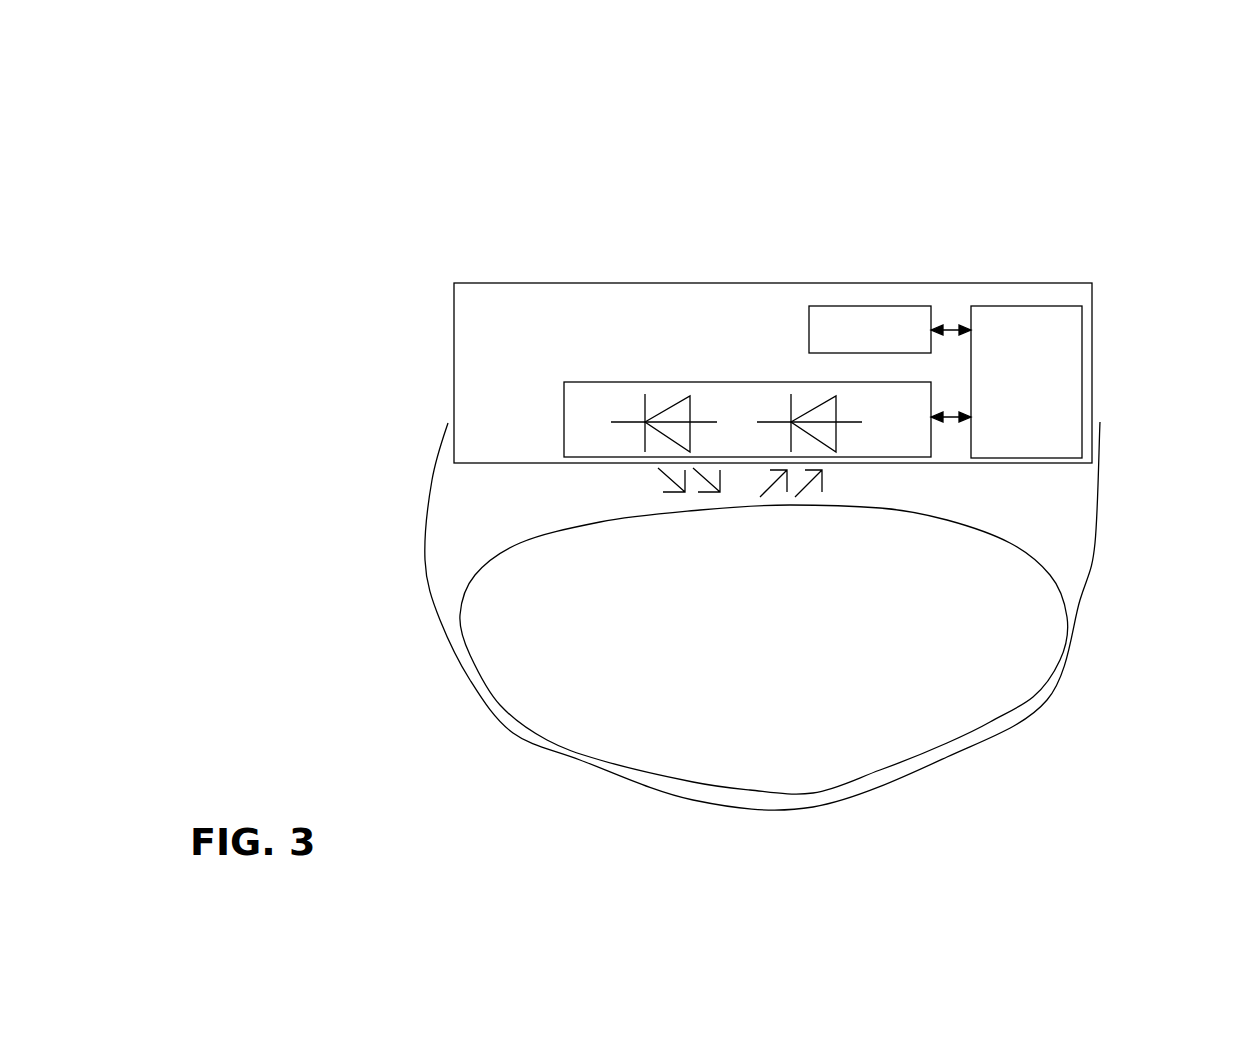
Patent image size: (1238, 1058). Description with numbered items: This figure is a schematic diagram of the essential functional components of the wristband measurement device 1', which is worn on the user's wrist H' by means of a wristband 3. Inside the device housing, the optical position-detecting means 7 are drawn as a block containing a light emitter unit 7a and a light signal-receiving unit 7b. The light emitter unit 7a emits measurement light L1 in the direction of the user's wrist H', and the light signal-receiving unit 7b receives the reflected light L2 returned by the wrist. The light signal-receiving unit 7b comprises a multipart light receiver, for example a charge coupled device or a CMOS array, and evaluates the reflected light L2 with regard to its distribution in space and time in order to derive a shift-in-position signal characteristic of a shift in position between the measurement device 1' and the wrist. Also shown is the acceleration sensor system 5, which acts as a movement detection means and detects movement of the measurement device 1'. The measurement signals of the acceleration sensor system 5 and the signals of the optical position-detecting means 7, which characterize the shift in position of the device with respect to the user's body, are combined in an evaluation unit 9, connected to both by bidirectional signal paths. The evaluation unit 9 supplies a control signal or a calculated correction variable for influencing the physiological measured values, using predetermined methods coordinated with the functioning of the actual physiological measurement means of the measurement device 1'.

The wristband measurement device 1' is at (810, 271).
The wristband 3 is at (472, 678).
The acceleration sensor system 5 is at (875, 306).
The optical position-detecting means 7 is at (747, 266).
The light emitter unit 7a is at (685, 407).
The light signal-receiving unit 7b is at (823, 413).
The evaluation unit 9 is at (1037, 365).
The measurement light L1 is at (687, 490).
The reflected light L2 is at (822, 475).
The user's wrist H' is at (838, 649).